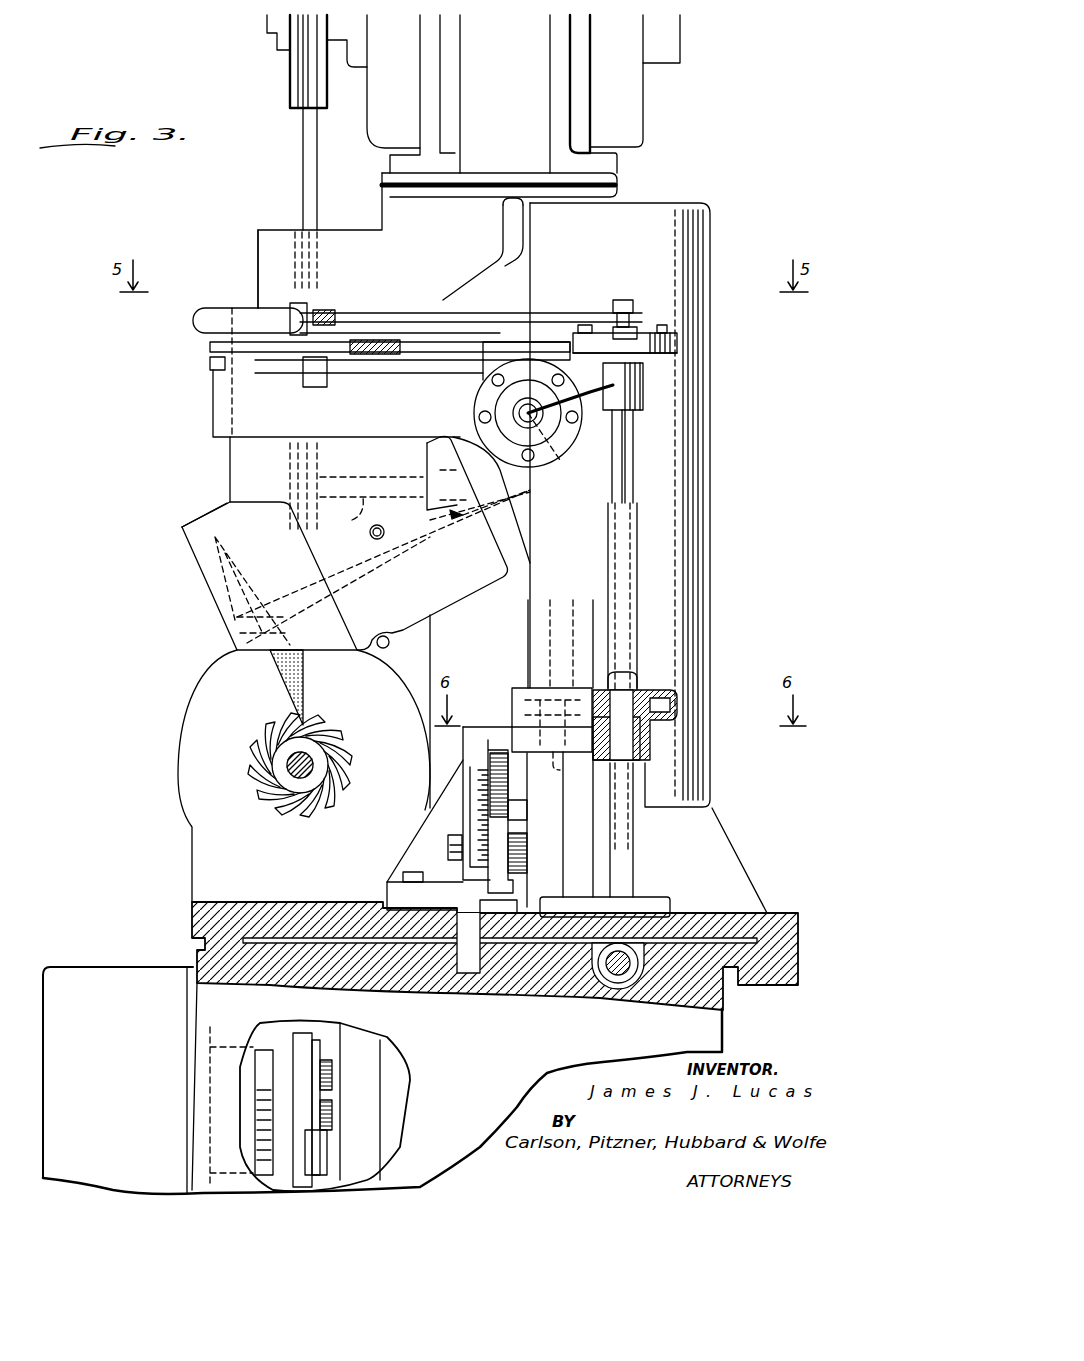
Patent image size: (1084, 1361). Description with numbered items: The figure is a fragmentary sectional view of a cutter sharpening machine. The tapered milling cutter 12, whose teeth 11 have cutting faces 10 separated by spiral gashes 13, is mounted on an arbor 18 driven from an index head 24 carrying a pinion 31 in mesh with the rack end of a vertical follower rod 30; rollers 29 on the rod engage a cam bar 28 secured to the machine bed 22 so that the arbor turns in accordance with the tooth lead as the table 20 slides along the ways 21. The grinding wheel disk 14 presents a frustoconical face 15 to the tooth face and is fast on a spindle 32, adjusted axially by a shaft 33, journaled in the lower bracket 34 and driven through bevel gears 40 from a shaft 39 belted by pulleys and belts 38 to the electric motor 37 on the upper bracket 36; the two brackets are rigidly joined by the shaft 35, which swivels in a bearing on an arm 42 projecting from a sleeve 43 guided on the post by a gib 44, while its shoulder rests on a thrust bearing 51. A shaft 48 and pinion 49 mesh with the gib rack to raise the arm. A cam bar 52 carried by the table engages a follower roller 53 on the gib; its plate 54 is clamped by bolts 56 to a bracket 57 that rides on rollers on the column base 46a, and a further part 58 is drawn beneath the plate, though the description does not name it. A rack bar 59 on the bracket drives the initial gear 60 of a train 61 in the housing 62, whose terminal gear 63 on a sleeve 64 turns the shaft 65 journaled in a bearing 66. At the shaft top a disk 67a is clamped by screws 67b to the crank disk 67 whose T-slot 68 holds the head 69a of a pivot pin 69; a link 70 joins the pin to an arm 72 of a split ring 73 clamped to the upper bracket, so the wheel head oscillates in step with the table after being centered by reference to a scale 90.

The cutting face 10 is at (300, 805).
The tooth 11 is at (280, 790).
The milling cutter 12 is at (248, 781).
The gash 13 is at (320, 795).
The disk 14 is at (280, 683).
The active peripheral face 15 is at (305, 700).
The arbor 18 is at (288, 763).
The table 20 is at (192, 912).
The ways 21 is at (440, 912).
The machine bed 22 is at (190, 950).
The index head 24 is at (192, 700).
The cam bar 28 is at (328, 1158).
The rollers 29 is at (330, 1120).
The follower rod 30 is at (370, 1055).
The pinion 31 is at (160, 666).
The spindle 32 is at (362, 570).
The shaft 33 is at (370, 534).
The bracket 34 is at (232, 468).
The shaft 35 is at (230, 408).
The upper bracket 36 is at (258, 280).
The electric motor 37 is at (380, 135).
The pulleys and belts 38 is at (300, 183).
The shaft 39 is at (346, 514).
The bevel gears 40 is at (501, 497).
The arm 42 is at (213, 390).
The sleeve 43 is at (695, 403).
The gib 44 is at (527, 815).
The base 46a is at (768, 930).
The shaft 48 is at (495, 402).
The pinion 49 is at (570, 433).
The antifriction thrust bearing 51 is at (210, 346).
The cam bar 52 is at (527, 865).
The follower roller 53 is at (527, 830).
The plate 54 is at (487, 880).
The bolts 56 is at (448, 848).
The bracket 57 is at (390, 885).
The guide 58 is at (520, 905).
The rack bar 59 is at (475, 727).
The initial gear 60 is at (572, 765).
The train 61 is at (562, 680).
The housing 62 is at (518, 688).
The terminal gear 63 is at (680, 698).
The sleeve 64 is at (622, 742).
The shaft 65 is at (637, 470).
The bearing 66 is at (645, 378).
The crank disk 67 is at (677, 340).
The disk 67a is at (677, 353).
The screws 67b is at (640, 330).
The T-slot 68 is at (598, 325).
The pivot pin 69 is at (630, 300).
The head 69a is at (660, 325).
The link 70 is at (458, 298).
The arm 72 is at (330, 305).
The split ring 73 is at (193, 320).
The scale 90 is at (210, 363).